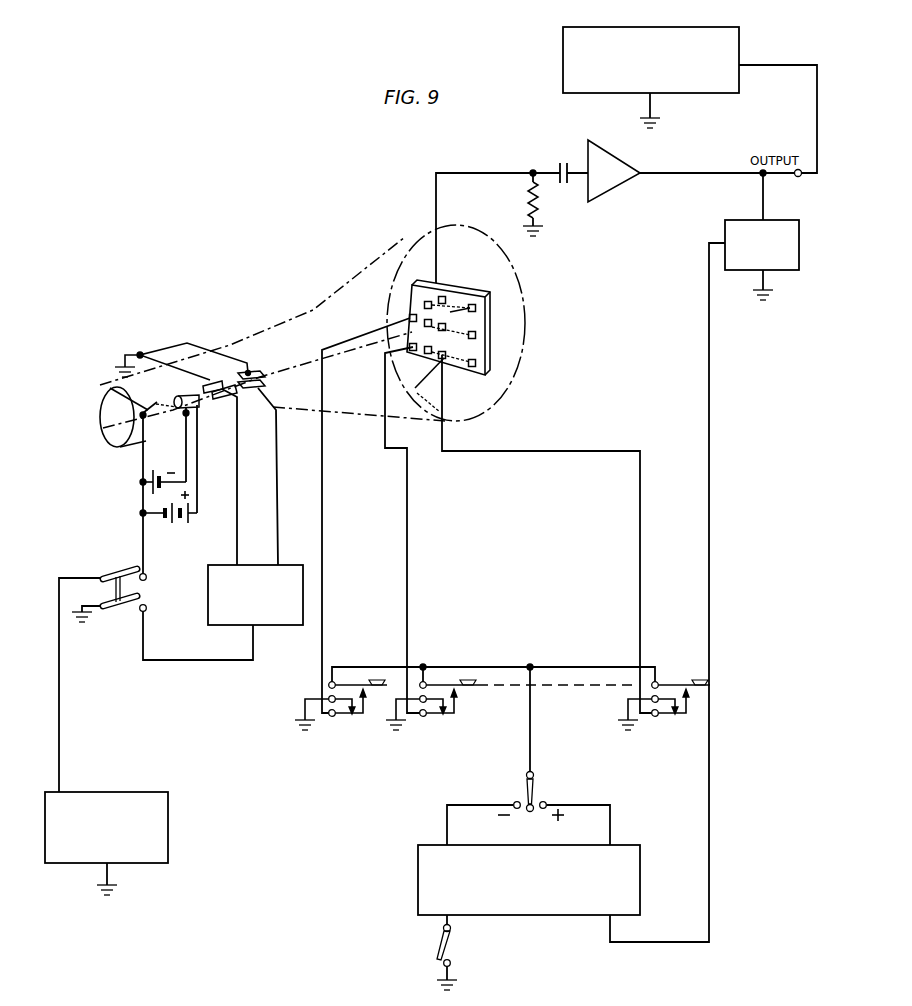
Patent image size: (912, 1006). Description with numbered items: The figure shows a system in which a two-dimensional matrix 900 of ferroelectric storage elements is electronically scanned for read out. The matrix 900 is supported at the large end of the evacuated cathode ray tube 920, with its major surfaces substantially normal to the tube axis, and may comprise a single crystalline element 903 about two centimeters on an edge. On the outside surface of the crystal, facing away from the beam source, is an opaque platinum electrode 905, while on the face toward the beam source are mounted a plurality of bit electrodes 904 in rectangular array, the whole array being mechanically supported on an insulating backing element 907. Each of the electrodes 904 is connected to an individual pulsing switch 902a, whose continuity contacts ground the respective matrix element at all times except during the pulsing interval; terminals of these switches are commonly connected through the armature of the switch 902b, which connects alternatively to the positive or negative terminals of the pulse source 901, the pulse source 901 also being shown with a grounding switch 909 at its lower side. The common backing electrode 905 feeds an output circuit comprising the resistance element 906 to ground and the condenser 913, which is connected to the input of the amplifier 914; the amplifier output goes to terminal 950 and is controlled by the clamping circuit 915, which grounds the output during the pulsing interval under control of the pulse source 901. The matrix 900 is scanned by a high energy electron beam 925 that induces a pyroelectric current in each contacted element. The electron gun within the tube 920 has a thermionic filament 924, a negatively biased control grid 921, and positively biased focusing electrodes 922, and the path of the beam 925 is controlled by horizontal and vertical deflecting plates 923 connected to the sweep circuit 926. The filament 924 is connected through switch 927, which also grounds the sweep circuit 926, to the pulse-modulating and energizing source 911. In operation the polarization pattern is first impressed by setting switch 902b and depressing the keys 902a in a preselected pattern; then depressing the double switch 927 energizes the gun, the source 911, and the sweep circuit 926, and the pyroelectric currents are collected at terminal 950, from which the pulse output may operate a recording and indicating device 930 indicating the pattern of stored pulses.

The matrix 900 is at (503, 407).
The pulse source 901 is at (418, 893).
The pulsing switch 902a is at (345, 718).
The switch 902b is at (540, 793).
The crystalline element 903 is at (412, 283).
The bit electrodes 904 is at (416, 381).
The platinum electrode 905 is at (484, 312).
The resistance element 906 is at (528, 200).
The insulating backing element 907 is at (453, 292).
The ground switch 909 is at (450, 950).
The pulse-modulating and energizing source 911 is at (165, 828).
The condenser 913 is at (562, 165).
The amplifier 914 is at (612, 183).
The clamping circuit 915 is at (791, 270).
The cathode ray tube 920 is at (353, 283).
The control grid 921 is at (152, 387).
The focusing electrodes 922 is at (188, 392).
The deflecting plates 923 is at (254, 394).
The thermionic filament 924 is at (110, 390).
The electron beam 925 is at (288, 370).
The sweep circuit 926 is at (233, 623).
The switch 927 is at (128, 612).
The recording and indicating device 930 is at (606, 93).
The terminal 950 is at (798, 177).